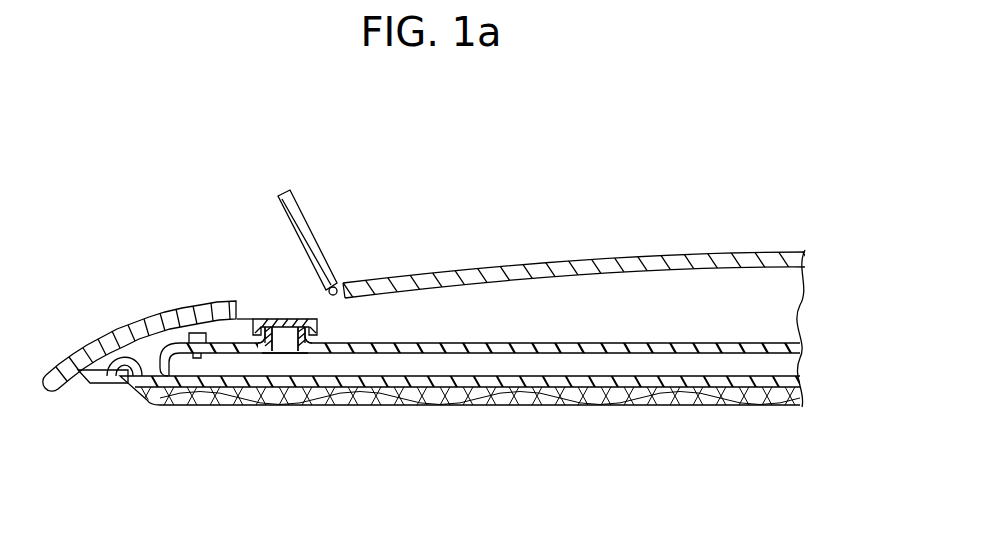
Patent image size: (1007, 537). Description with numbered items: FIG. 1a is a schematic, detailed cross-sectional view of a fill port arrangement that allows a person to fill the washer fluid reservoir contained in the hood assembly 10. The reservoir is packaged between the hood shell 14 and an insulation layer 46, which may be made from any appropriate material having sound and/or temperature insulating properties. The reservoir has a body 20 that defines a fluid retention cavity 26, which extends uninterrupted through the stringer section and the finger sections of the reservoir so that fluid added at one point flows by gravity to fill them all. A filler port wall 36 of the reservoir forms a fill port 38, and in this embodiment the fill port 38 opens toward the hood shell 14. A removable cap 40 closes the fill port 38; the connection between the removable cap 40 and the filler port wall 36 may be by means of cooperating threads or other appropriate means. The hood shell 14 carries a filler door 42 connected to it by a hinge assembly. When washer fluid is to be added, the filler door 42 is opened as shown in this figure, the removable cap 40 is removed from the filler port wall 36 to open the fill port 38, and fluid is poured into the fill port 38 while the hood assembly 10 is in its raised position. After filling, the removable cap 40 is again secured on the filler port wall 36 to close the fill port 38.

The hood assembly 10 is at (578, 188).
The hood shell 14 is at (708, 260).
The body 20 is at (558, 343).
The fluid retention cavity 26 is at (443, 366).
The filler port wall 36 is at (290, 343).
The fill port 38 is at (287, 333).
The removable cap 40 is at (260, 318).
The filler door 42 is at (305, 208).
The insulation layer 46 is at (578, 400).